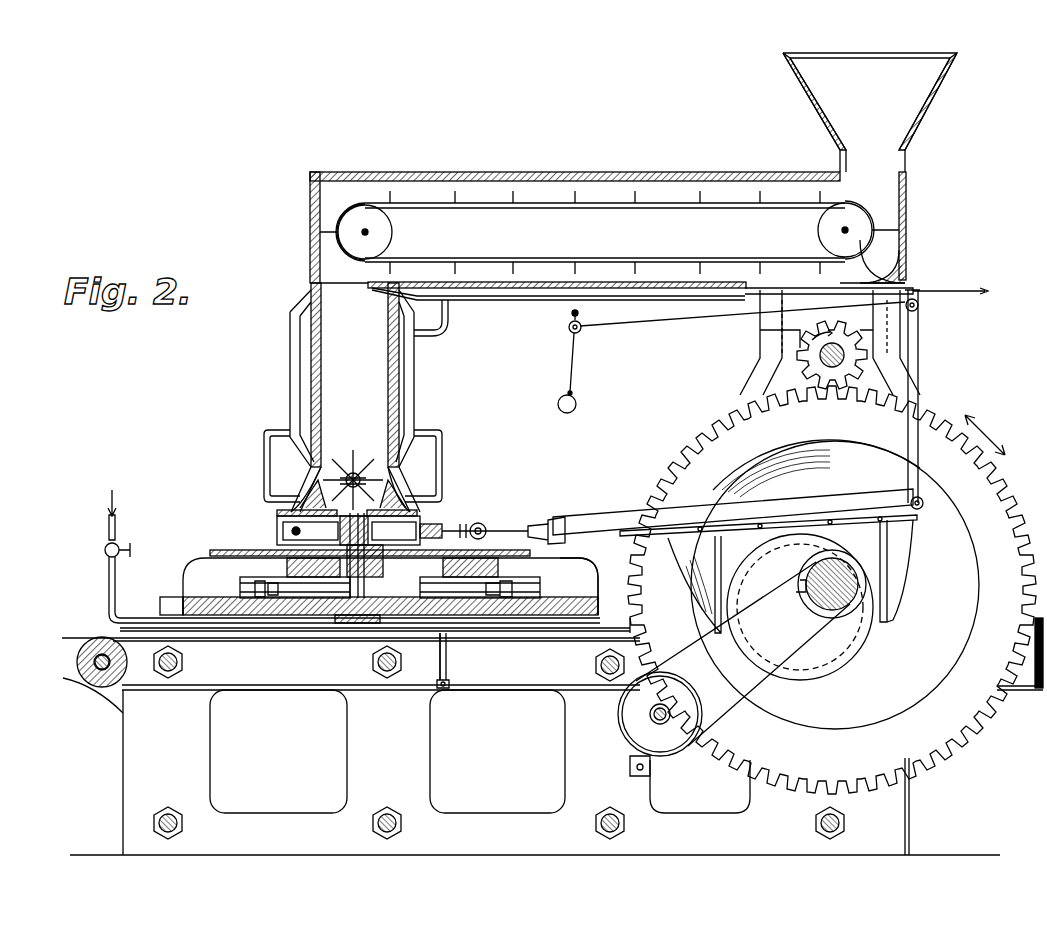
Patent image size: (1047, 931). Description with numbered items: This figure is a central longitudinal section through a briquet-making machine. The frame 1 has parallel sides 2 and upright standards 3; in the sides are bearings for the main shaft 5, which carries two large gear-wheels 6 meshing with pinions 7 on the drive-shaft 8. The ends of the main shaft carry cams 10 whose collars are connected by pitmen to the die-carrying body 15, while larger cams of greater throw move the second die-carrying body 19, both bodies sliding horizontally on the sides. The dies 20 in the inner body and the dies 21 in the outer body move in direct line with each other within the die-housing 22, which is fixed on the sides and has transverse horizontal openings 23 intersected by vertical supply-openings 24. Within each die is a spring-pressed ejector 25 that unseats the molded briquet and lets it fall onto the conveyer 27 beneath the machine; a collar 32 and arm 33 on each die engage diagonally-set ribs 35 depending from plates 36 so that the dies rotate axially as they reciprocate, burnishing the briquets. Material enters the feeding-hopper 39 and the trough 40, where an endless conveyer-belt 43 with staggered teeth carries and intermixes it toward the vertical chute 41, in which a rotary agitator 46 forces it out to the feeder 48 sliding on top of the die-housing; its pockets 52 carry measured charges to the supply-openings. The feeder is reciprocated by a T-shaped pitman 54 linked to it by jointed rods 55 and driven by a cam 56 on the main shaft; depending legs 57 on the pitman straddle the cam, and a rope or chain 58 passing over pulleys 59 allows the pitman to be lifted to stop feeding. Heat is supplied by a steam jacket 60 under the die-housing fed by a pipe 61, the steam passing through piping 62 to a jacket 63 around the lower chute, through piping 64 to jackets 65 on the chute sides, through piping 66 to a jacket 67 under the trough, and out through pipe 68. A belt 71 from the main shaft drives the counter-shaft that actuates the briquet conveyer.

The frame 1 is at (480, 751).
The sides 2 is at (196, 725).
The standards 3 is at (895, 345).
The main shaft 5 is at (850, 583).
The gear-wheels 6 is at (832, 590).
The pinions 7 is at (770, 368).
The drive-shaft 8 is at (846, 357).
The cams 10 is at (658, 722).
The die-carrying body 15 is at (598, 572).
The second die-carrying body 19 is at (196, 560).
The dies 20 is at (455, 605).
The dies 21 is at (300, 595).
The die-housing 22 is at (330, 598).
The horizontal openings 23 is at (356, 604).
The supply-openings 24 is at (432, 526).
The ejector 25 is at (350, 628).
The conveyer 27 is at (170, 690).
The collar 32 is at (258, 590).
The arm 33 is at (285, 565).
The ribs 35 is at (250, 547).
The plates 36 is at (518, 543).
The feeding-hopper 39 is at (870, 166).
The trough 40 is at (673, 190).
The chute 41 is at (355, 397).
The conveyer-belt 43 is at (540, 200).
The rotary agitator 46 is at (352, 466).
The feeder 48 is at (290, 515).
The pockets 52 is at (395, 490).
The T-shaped pitman 54 is at (612, 512).
The jointed rods 55 is at (500, 535).
The cam 56 is at (845, 650).
The depending legs 57 is at (708, 552).
The rope or chain 58 is at (920, 490).
The pulleys 59 is at (580, 332).
The steam jacket 60 is at (422, 672).
The pipe 61 is at (116, 538).
The piping 62 is at (447, 680).
The jacket 63 is at (305, 500).
The piping 64 is at (264, 443).
The jackets 65 is at (290, 345).
The piping 66 is at (450, 318).
The jacket 67 is at (560, 292).
The pipe 68 is at (925, 290).
The belt 71 is at (743, 654).